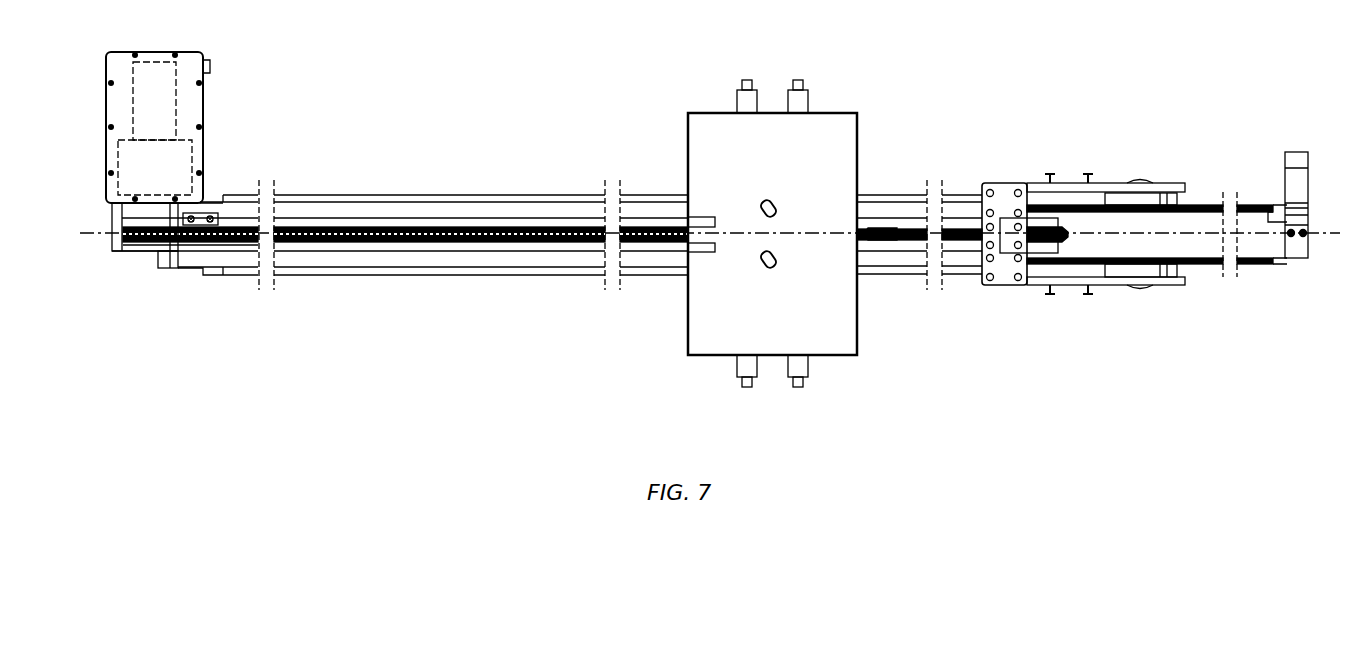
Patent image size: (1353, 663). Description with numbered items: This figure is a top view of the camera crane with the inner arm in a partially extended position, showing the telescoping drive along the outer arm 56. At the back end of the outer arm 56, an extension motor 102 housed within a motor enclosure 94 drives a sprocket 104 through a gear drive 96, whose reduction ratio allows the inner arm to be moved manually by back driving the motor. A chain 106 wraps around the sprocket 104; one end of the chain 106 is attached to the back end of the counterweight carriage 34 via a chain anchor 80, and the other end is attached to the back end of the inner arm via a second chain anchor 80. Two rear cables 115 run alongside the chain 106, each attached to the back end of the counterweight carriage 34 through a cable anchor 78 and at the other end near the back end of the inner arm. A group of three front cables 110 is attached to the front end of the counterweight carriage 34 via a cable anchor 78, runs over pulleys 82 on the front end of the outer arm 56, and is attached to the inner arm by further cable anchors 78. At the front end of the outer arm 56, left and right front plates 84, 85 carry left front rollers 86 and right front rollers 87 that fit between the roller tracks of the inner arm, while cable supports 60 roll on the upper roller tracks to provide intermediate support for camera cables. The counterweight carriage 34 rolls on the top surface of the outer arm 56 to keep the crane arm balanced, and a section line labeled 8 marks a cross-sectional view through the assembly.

The section line 8- 8 is at (83, 238).
The counterweight carriage 34 is at (840, 320).
The outer arm 56 is at (516, 210).
The cable supports 60 is at (1293, 165).
The cable anchor 78 is at (715, 222).
The chain anchor 80 is at (680, 245).
The pulleys 82 is at (128, 250).
The left front plate 84 is at (1115, 188).
The right front plate 85 is at (1075, 285).
The left front rollers 86 is at (1150, 200).
The right front rollers 87 is at (1150, 272).
The motor enclosure 94 is at (187, 108).
The gear drive 96 is at (148, 225).
The extension motor 102 is at (162, 103).
The sprocket 104 is at (143, 250).
The chain 106 is at (228, 248).
The front cables 110 is at (955, 230).
The rear cables 115 is at (373, 228).